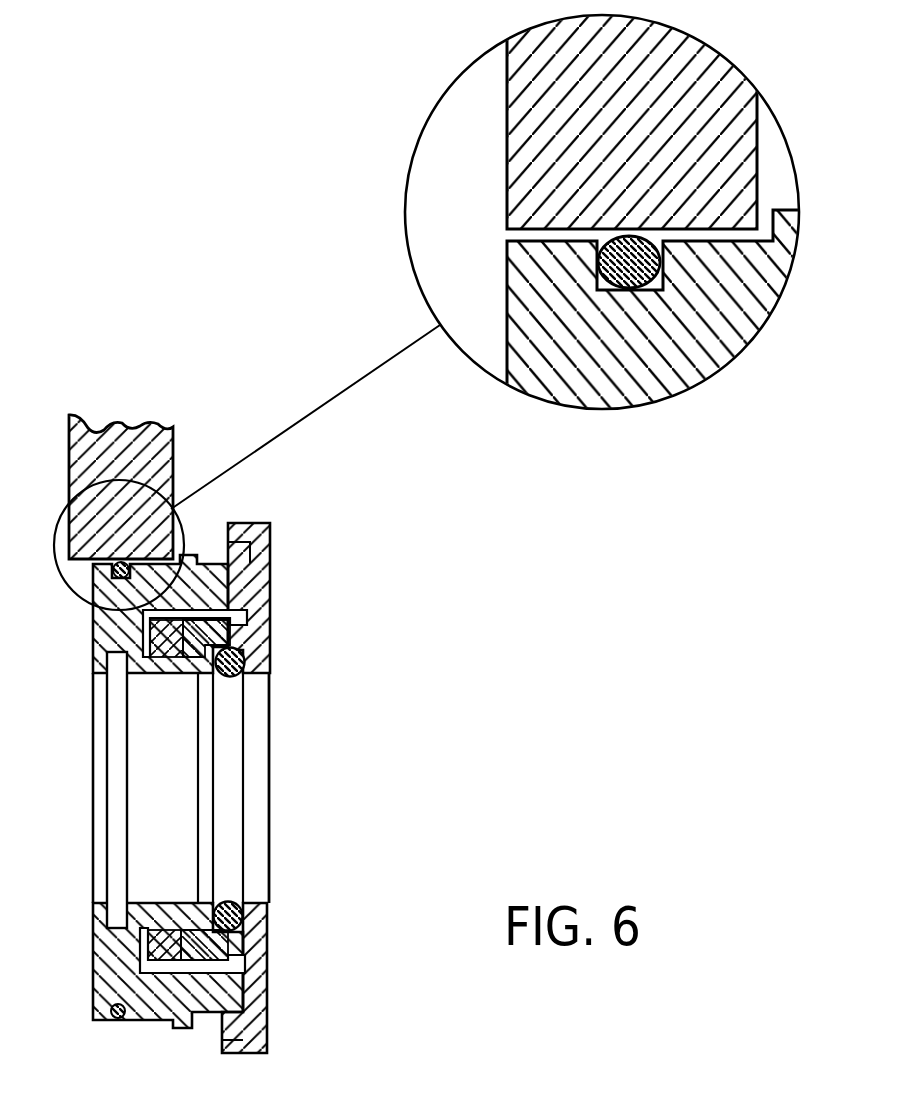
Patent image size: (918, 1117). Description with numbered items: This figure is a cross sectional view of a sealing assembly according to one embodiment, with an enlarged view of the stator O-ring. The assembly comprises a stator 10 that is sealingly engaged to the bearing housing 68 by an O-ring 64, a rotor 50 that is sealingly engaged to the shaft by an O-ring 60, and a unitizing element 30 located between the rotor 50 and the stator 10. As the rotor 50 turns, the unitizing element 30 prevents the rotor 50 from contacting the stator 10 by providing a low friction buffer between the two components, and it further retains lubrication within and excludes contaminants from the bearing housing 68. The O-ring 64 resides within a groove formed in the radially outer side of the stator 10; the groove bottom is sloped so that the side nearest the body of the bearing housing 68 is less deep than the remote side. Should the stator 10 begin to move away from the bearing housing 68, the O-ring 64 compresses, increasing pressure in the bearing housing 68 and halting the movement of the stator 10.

The stator 10 is at (270, 525).
The unitizing element 30 is at (197, 637).
The rotor 50 is at (185, 578).
The O-ring 60 is at (267, 673).
The O-ring 64 is at (118, 570).
The bearing housing 68 is at (153, 440).